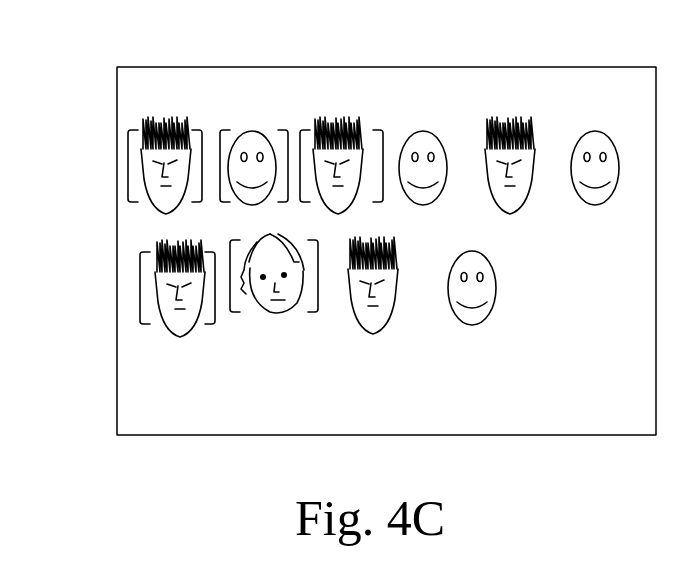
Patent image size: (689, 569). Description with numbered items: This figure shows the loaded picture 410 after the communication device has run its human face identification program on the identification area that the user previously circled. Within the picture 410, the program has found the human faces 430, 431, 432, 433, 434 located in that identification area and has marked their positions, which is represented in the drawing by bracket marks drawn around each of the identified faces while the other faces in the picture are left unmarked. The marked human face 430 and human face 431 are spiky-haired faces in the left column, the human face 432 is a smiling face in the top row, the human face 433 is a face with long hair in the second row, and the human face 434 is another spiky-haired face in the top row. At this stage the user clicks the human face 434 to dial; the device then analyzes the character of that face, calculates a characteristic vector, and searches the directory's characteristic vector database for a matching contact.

The picture 410 is at (598, 379).
The human face 430 is at (128, 167).
The human face 431 is at (138, 298).
The human face 432 is at (229, 128).
The human face 433 is at (232, 303).
The human face 434 is at (302, 130).